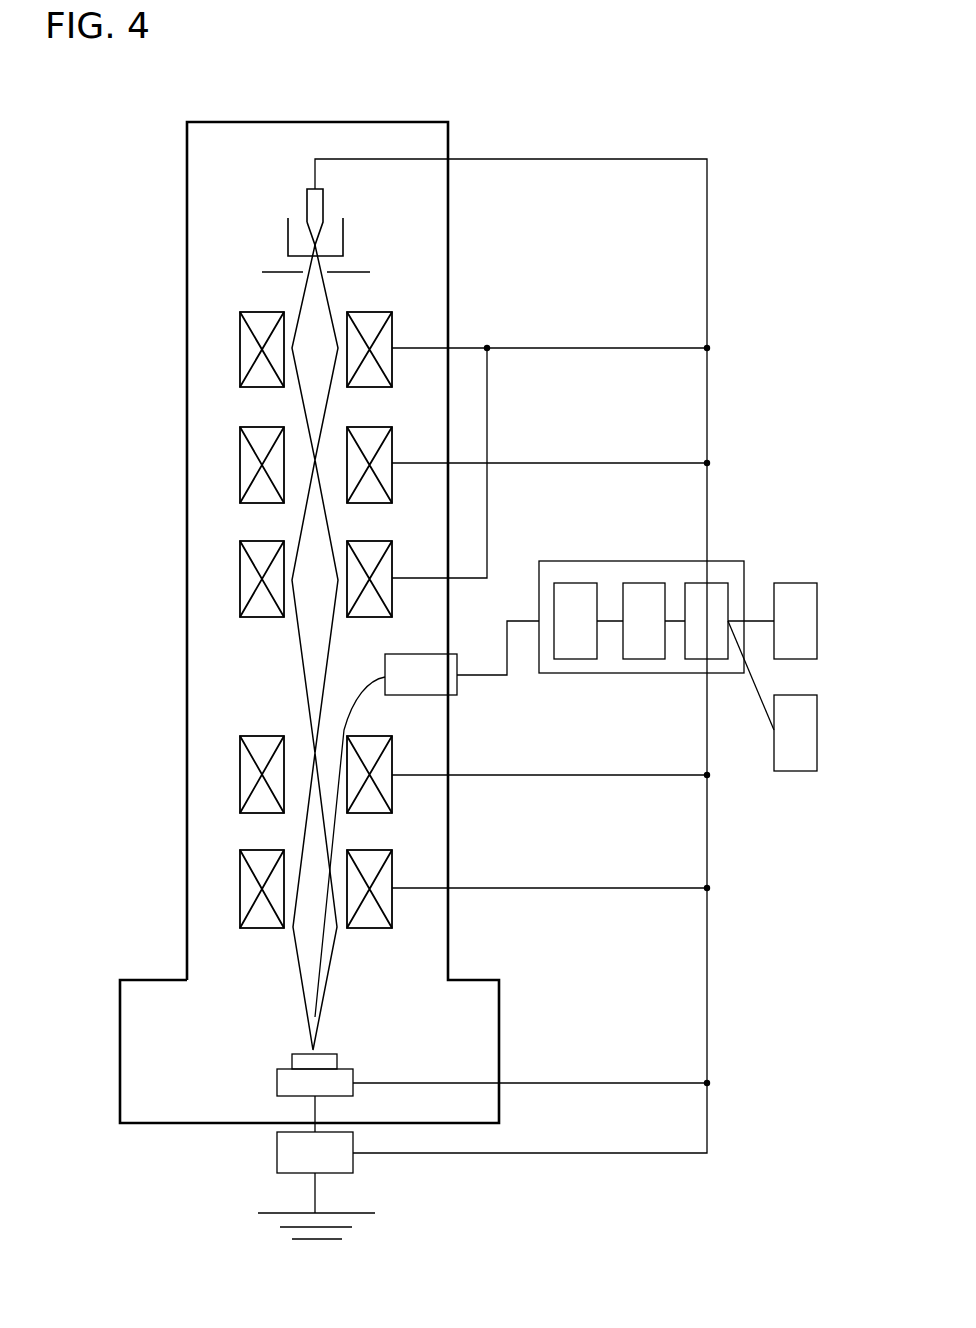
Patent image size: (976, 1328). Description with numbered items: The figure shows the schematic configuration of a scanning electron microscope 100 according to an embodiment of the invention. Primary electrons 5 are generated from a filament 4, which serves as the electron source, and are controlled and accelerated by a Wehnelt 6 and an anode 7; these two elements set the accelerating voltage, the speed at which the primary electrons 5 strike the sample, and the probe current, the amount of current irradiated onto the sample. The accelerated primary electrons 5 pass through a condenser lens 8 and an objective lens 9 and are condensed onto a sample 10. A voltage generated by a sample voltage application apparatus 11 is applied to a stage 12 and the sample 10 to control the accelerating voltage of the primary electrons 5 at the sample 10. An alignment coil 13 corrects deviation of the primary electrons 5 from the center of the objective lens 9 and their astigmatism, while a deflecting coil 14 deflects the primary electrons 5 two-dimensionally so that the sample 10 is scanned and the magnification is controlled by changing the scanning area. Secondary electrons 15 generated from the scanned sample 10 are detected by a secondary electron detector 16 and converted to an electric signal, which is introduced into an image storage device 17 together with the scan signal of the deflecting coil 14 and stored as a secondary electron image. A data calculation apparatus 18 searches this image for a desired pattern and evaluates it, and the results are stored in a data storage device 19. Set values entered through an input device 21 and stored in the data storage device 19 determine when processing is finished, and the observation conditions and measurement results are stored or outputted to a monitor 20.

The filament 4 is at (307, 200).
The primary electrons 5 is at (308, 645).
The Wehnelt 6 is at (343, 237).
The anode 7 is at (280, 270).
The condenser lens 8 is at (240, 350).
The objective lens 9 is at (240, 874).
The sample 10 is at (337, 1063).
The sample voltage application apparatus 11 is at (277, 1153).
The stage 12 is at (277, 1083).
The alignment coil 13 is at (240, 466).
The deflecting coil 14 is at (240, 777).
The secondary electrons 15 is at (333, 815).
The secondary electron detector 16 is at (457, 688).
The image storage device 17 is at (568, 583).
The data calculation apparatus 18 is at (641, 583).
The data storage device 19 is at (697, 659).
The monitor 20 is at (795, 583).
The input device 21 is at (793, 772).
The scanning electron microscope 100 is at (728, 97).